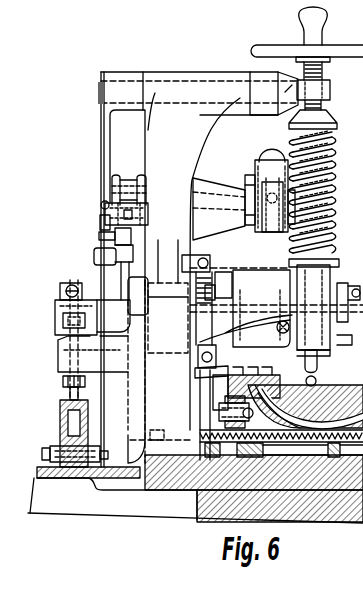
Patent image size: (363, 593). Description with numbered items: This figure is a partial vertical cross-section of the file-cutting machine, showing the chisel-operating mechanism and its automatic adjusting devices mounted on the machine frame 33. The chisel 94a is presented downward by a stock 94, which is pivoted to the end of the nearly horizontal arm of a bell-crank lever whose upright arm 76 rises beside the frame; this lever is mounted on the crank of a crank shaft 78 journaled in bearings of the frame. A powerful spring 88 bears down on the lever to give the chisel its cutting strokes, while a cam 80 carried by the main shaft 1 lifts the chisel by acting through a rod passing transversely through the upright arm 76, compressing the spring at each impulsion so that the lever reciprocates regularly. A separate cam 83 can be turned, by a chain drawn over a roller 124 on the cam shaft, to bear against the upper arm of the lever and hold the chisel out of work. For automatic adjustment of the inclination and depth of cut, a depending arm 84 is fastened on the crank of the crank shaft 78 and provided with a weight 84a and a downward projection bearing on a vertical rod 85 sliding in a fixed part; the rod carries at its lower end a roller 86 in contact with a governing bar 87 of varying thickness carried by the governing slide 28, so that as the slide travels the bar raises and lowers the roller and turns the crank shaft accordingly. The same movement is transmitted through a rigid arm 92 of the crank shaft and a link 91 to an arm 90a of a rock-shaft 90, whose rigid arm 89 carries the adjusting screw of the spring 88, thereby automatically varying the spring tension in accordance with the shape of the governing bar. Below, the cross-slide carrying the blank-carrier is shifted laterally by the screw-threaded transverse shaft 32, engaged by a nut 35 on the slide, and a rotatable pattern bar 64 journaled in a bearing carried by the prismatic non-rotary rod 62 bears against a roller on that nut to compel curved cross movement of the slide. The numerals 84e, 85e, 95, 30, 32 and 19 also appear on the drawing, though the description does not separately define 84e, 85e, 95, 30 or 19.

The main shaft 1 is at (101, 206).
The governing slide 28 is at (90, 432).
The base 30 is at (138, 486).
The screw-threaded transverse shaft 32 is at (8, 418).
The machine frame 33 is at (199, 269).
The nut 35 is at (243, 455).
The prismatic non-rotary rod 62 is at (228, 387).
The rotatable pattern bar 64 is at (224, 414).
The upright arm of bell-crank lever 76 is at (256, 260).
The crank shaft 78 is at (60, 292).
The cam 80 is at (272, 232).
The cam 83 is at (250, 160).
The depending arm 84 is at (62, 312).
The weight 84a is at (60, 325).
The guide 84e is at (115, 304).
The vertical rod 85 is at (68, 357).
The guide 85e is at (100, 355).
The roller 86 is at (68, 385).
The governing bar 87 is at (80, 393).
The spring 88 is at (328, 165).
The rigid arm of rock-shaft 89 is at (343, 95).
The rock-shaft 90 is at (103, 95).
The arm of rock-shaft 90a is at (104, 152).
The link 91 is at (99, 236).
The rigid arm of crank-shaft 92 is at (100, 265).
The stock 94 is at (332, 348).
The chisel 94a is at (318, 365).
The housing 95 is at (292, 298).
The roller 124 is at (124, 186).
The bracket 19 is at (4, 444).